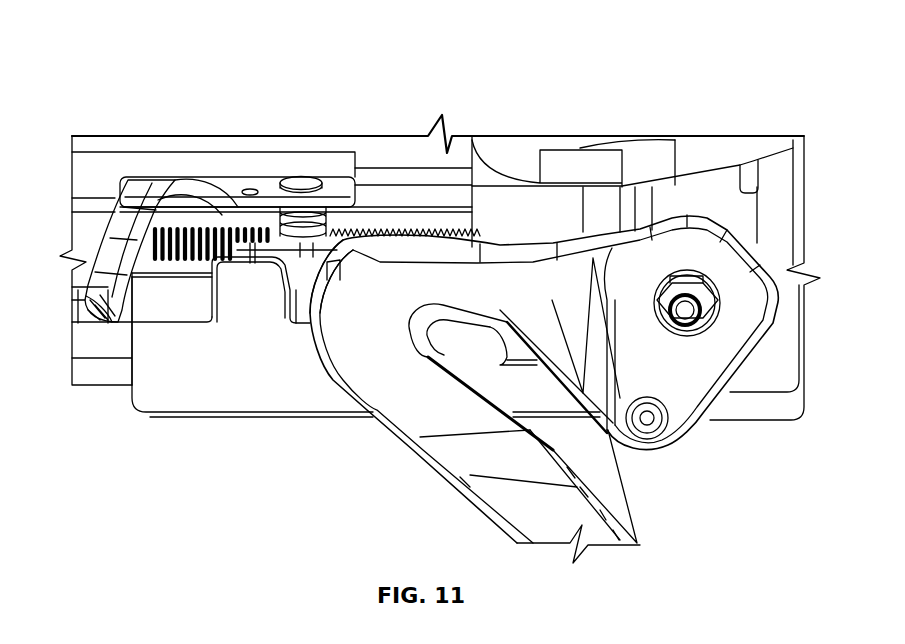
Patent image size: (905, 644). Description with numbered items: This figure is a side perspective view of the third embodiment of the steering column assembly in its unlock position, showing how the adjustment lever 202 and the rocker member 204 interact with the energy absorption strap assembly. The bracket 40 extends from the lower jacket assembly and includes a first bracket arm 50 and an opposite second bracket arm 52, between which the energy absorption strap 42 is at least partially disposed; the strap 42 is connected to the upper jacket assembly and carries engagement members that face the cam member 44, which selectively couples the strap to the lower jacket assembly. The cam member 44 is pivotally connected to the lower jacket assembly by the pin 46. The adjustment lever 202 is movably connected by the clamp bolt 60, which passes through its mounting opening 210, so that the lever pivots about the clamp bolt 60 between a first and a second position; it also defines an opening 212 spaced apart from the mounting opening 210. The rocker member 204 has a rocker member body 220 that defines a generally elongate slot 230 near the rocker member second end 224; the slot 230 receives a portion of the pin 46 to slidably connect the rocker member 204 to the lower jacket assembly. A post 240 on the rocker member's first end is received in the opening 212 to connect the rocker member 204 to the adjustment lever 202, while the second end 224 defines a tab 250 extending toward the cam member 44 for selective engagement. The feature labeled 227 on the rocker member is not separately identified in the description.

The bracket 40 is at (130, 176).
The energy absorption strap 42 is at (207, 217).
The second bracket arm 52 is at (250, 189).
The pin 46 is at (300, 177).
The adjustment lever 202 is at (514, 250).
The mounting opening 210 is at (683, 270).
The cam member 44 is at (300, 268).
The first bracket arm 50 is at (163, 297).
The generally elongate slot 230 is at (212, 292).
The tab 250 is at (237, 298).
The rocker member body 220 is at (463, 350).
The rail edge 227 is at (520, 395).
The opening 212 is at (646, 395).
The post 240 is at (652, 418).
The clamp bolt 60 is at (804, 380).
The rocker member second end 224 is at (295, 395).
The rocker member 204 is at (336, 423).